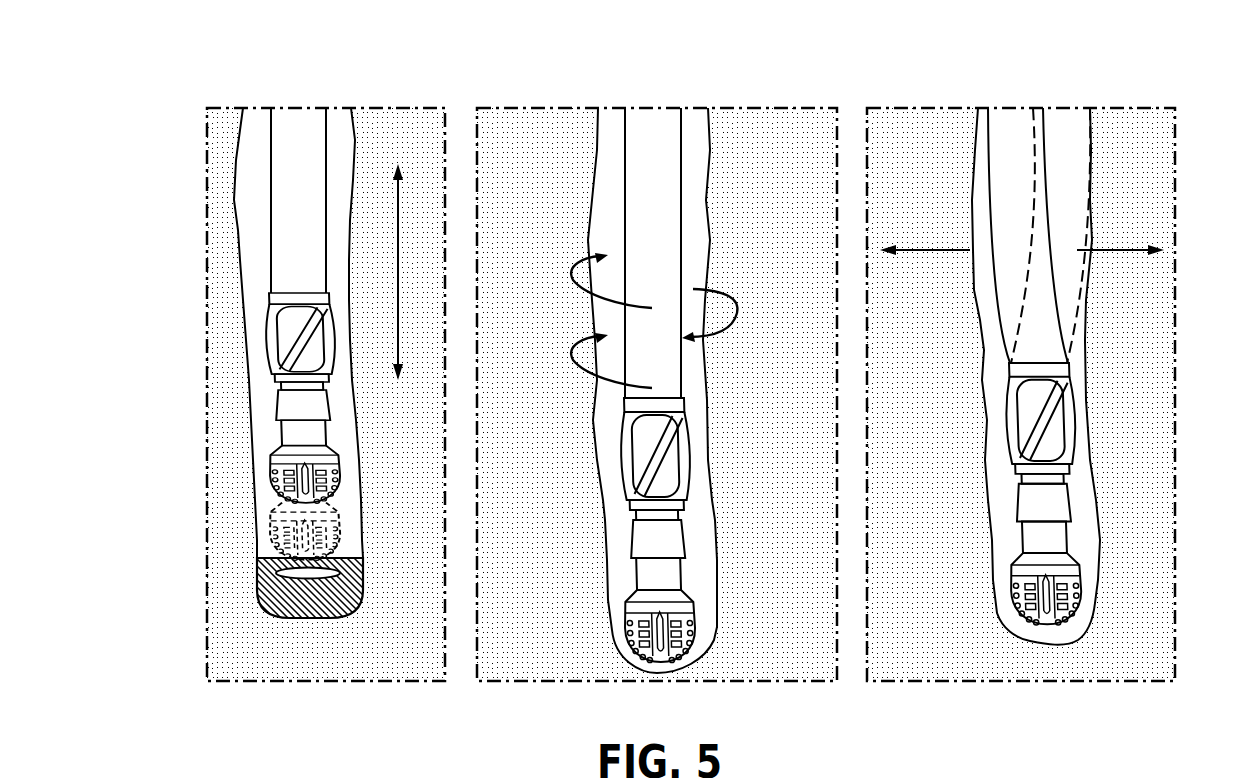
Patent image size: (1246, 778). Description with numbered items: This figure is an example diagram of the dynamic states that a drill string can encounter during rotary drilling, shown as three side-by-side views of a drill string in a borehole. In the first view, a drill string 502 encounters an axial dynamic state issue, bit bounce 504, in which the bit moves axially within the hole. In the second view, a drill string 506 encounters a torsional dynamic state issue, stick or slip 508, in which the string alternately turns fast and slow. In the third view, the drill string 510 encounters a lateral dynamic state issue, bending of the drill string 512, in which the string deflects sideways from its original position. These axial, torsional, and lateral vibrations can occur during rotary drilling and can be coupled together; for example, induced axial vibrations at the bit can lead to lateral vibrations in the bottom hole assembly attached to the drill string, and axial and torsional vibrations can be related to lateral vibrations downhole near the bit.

The drill string 502 is at (291, 293).
The bit bounce 504 is at (366, 66).
The drill string 506 is at (677, 195).
The stick or slip 508 is at (688, 66).
The drill string 510 is at (991, 225).
The bending of the drill string 512 is at (1045, 66).